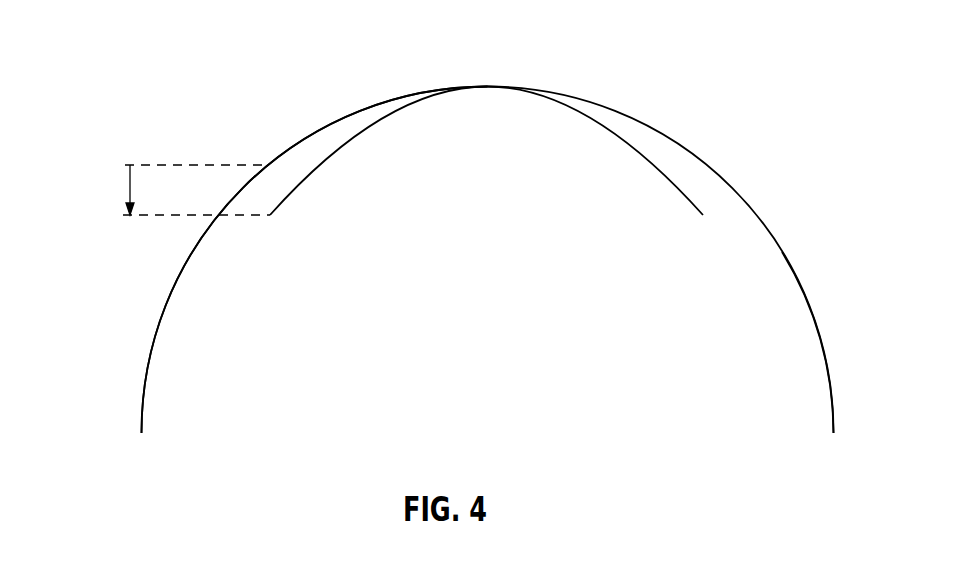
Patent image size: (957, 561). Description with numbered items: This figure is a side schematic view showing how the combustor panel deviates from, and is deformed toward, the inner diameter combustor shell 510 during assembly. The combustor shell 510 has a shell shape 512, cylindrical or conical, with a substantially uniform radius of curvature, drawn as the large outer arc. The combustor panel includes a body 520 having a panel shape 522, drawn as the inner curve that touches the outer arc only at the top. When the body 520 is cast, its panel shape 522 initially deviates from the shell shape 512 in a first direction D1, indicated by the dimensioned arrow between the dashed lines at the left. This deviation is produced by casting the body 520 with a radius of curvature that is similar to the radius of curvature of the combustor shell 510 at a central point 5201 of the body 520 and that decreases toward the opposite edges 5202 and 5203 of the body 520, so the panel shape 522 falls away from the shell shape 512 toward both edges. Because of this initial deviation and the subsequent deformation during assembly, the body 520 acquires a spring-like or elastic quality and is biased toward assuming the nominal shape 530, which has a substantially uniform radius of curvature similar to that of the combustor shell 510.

The inner diameter combustor shell 510 is at (782, 252).
The shell shape 512 is at (827, 363).
The body 520 is at (603, 130).
The central point 5201 is at (488, 87).
The opposite edge 5202 is at (270, 216).
The opposite edge 5203 is at (703, 215).
The panel shape 522 is at (660, 168).
The nominal shape 530 is at (337, 121).
The first direction D1 is at (128, 190).